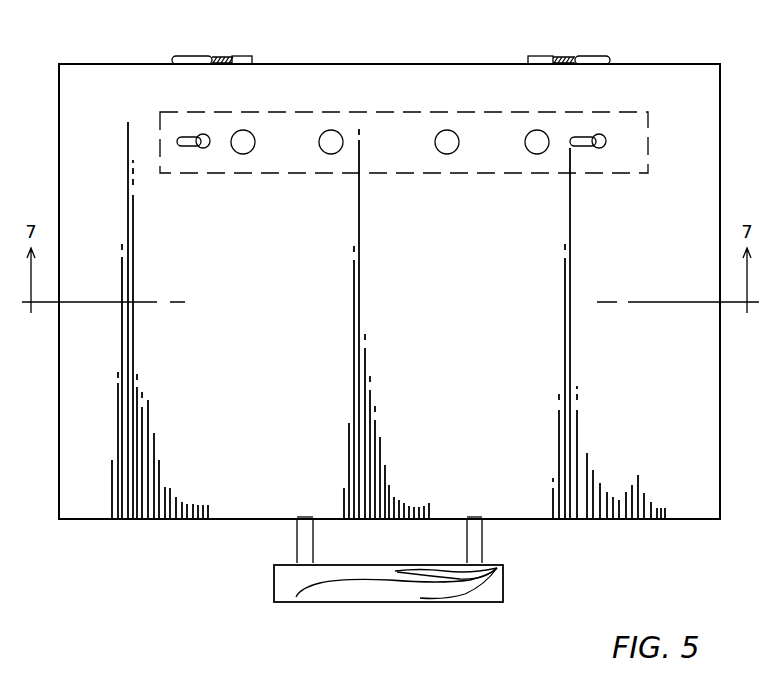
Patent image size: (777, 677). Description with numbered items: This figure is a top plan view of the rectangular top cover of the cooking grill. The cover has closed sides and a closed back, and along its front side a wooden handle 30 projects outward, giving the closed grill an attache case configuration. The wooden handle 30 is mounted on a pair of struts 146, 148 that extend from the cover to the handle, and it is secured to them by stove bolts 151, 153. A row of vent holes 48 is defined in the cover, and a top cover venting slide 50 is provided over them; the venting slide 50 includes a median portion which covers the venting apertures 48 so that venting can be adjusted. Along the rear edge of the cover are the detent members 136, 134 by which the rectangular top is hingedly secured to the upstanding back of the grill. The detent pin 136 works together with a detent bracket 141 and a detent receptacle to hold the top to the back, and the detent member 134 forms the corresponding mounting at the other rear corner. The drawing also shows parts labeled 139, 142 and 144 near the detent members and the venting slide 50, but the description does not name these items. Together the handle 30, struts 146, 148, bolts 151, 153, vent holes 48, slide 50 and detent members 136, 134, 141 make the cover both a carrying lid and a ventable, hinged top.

The wooden handle 30 is at (408, 597).
The vent holes 48 is at (338, 132).
The top cover venting slide 50 is at (186, 137).
The detent member 134 is at (597, 56).
The detent pin 136 is at (183, 56).
The right spring 139 is at (580, 64).
The detent bracket 141 is at (200, 63).
The pin head 142 is at (203, 149).
The right retaining pin 144 is at (606, 138).
The strut 146 is at (297, 540).
The strut 148 is at (482, 540).
The stove bolt 151 is at (311, 516).
The stove bolt 153 is at (468, 515).